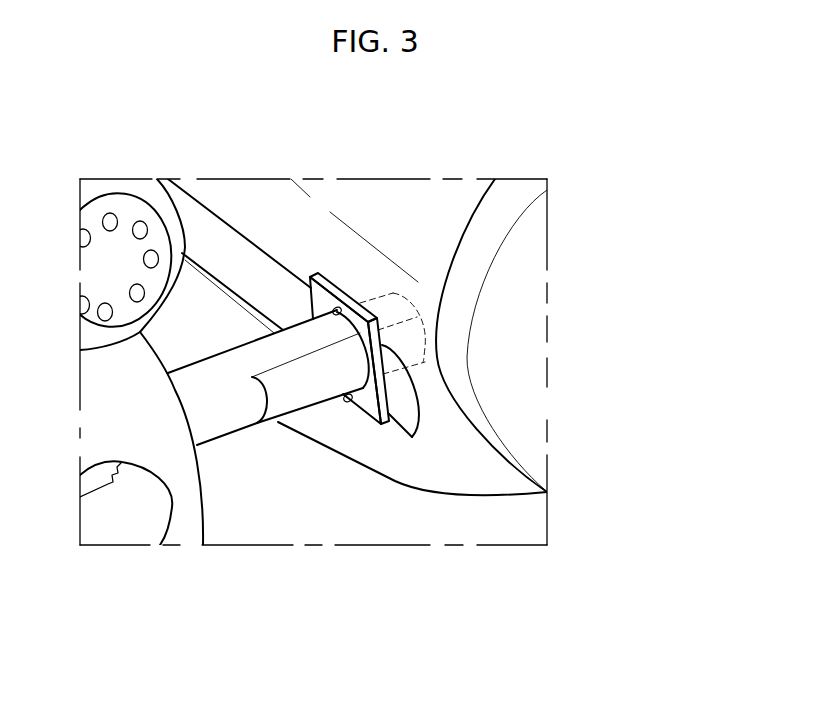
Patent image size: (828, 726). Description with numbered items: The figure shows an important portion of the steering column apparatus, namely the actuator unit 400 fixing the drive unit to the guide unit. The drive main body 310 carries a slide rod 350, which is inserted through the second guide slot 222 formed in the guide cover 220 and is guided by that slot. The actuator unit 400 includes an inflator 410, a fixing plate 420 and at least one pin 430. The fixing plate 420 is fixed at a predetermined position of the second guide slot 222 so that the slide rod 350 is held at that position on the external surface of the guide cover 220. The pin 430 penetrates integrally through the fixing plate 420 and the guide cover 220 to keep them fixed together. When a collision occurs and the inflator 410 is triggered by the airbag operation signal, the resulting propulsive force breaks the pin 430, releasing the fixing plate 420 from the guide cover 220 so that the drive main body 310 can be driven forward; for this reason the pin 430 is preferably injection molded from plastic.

The guide cover 220 is at (390, 212).
The second guide slot 222 is at (251, 272).
The drive main body 310 is at (190, 530).
The slide rod 350 is at (222, 417).
The actuator unit 400 is at (353, 394).
The inflator 410 is at (132, 213).
The fixing plate 420 is at (367, 405).
The pin 430 is at (337, 312).